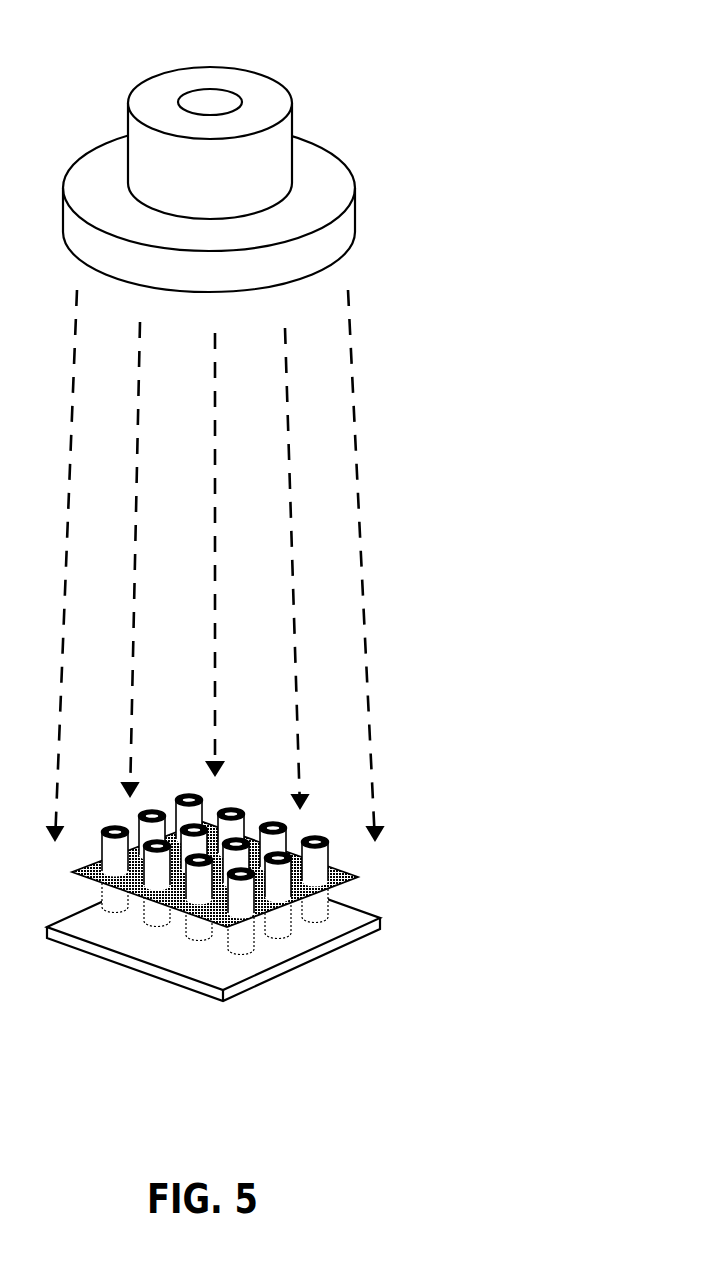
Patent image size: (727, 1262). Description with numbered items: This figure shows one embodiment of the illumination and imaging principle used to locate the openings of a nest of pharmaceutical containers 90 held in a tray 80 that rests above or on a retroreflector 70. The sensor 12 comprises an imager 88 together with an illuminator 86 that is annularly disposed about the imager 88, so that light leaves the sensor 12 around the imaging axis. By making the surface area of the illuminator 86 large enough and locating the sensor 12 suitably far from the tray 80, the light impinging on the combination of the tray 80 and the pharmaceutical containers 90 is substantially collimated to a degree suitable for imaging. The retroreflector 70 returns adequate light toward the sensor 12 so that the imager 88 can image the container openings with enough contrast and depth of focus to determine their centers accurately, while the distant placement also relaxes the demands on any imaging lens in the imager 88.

The sensor 12 is at (347, 147).
The illuminator 86 is at (355, 233).
The imager 88 is at (328, 114).
The pharmaceutical containers 90 is at (322, 732).
The tray 80 is at (358, 876).
The retroreflector 70 is at (348, 950).